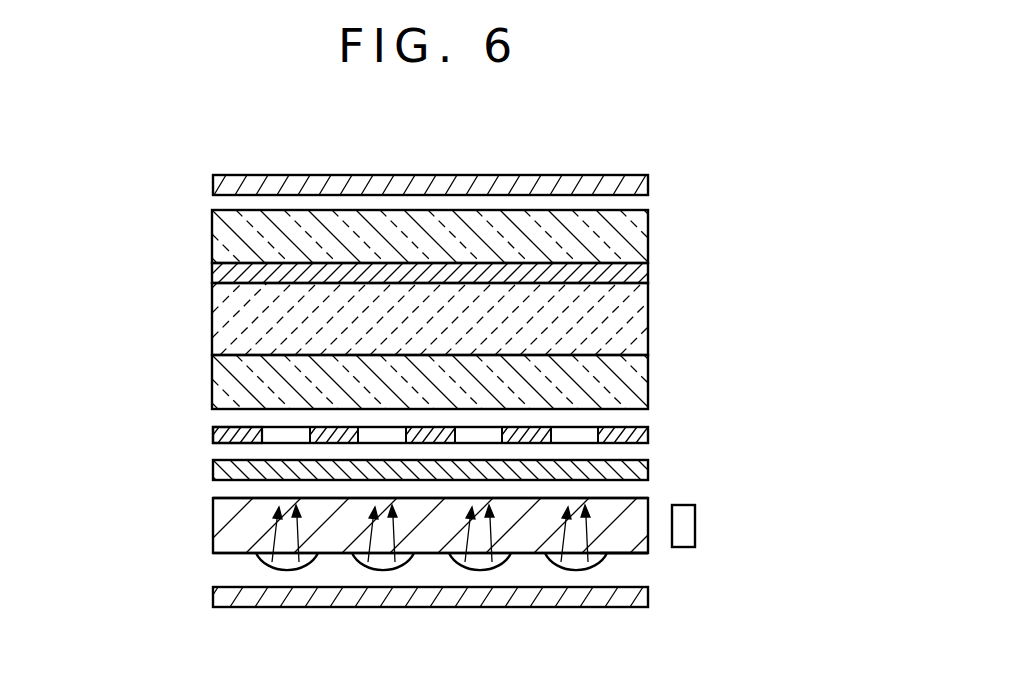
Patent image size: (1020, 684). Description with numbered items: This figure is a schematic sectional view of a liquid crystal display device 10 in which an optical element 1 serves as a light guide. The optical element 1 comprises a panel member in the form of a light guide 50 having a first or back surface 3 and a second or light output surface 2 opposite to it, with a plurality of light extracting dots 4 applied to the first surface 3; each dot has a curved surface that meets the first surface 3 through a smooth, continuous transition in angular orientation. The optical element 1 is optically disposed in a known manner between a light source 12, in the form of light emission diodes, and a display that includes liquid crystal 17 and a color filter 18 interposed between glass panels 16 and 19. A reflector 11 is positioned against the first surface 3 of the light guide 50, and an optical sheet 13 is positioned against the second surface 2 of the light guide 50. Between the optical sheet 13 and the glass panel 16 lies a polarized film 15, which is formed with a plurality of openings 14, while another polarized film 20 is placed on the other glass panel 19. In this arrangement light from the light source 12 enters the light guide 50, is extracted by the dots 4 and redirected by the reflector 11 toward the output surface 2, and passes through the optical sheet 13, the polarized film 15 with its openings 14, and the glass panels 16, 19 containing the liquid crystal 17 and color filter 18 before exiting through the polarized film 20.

The optical element 1 is at (436, 536).
The second surface 2 is at (616, 498).
The first surface 3 is at (223, 553).
The light extracting dot 4 is at (262, 566).
The liquid crystal display device 10 is at (430, 309).
The reflector 11 is at (397, 609).
The light source 12 is at (695, 522).
The optical sheet 13 is at (212, 470).
The openings 14 is at (585, 421).
The polarized film 15 is at (212, 434).
The glass panel 16 is at (650, 383).
The liquid crystal 17 is at (650, 326).
The color filter 18 is at (650, 275).
The glass panel 19 is at (212, 239).
The polarized film 20 is at (560, 175).
The light guide 50 is at (620, 547).